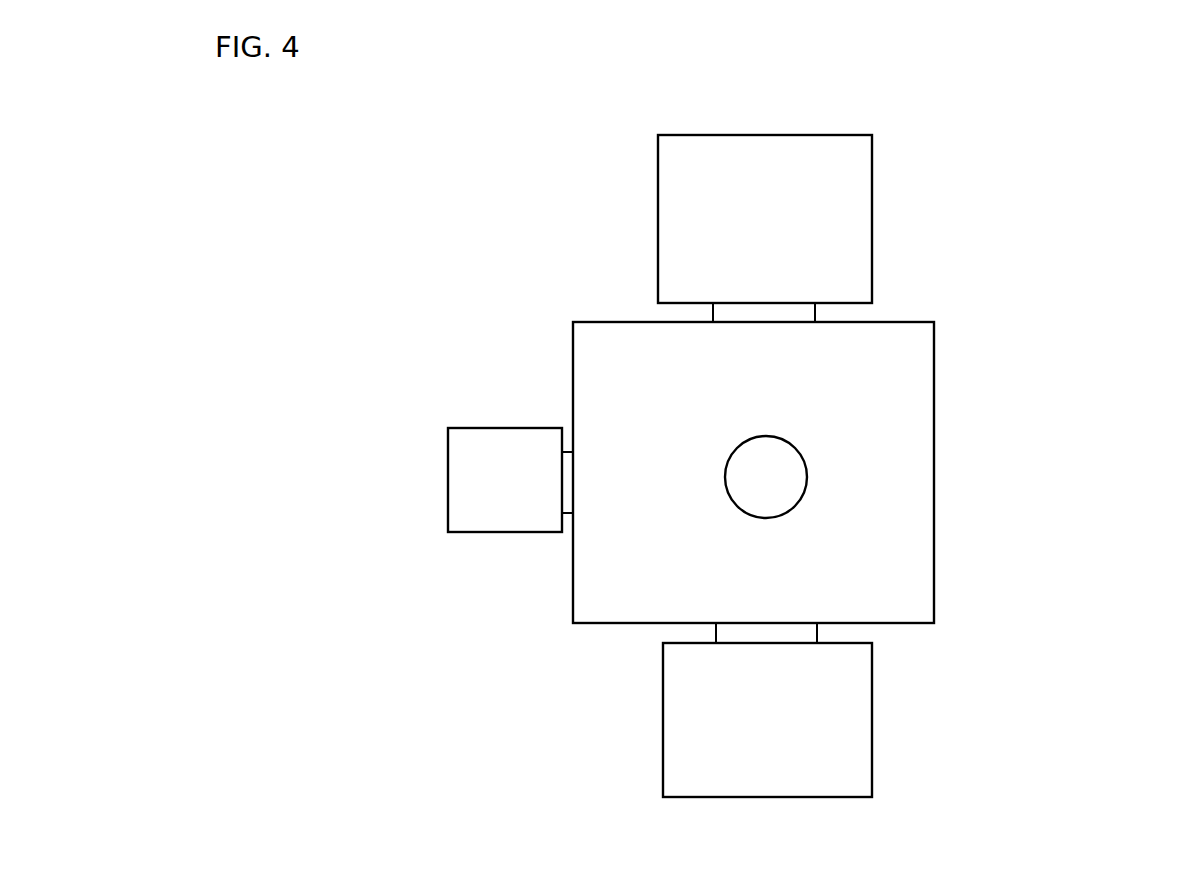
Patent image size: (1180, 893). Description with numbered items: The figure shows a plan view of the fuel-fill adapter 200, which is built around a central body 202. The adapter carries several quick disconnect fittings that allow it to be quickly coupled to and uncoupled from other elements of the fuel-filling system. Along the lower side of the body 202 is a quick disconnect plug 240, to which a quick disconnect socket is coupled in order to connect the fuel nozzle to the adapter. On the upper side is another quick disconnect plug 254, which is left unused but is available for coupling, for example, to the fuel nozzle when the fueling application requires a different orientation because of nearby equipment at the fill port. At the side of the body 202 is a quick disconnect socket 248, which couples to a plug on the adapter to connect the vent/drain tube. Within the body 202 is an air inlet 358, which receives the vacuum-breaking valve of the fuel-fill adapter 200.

The fuel-fill adapter 200 is at (1052, 328).
The body 202 is at (631, 400).
The quick disconnect plug 254 is at (735, 227).
The quick disconnect socket 248 is at (476, 495).
The quick disconnect plug 240 is at (745, 738).
The air inlet 358 is at (741, 493).